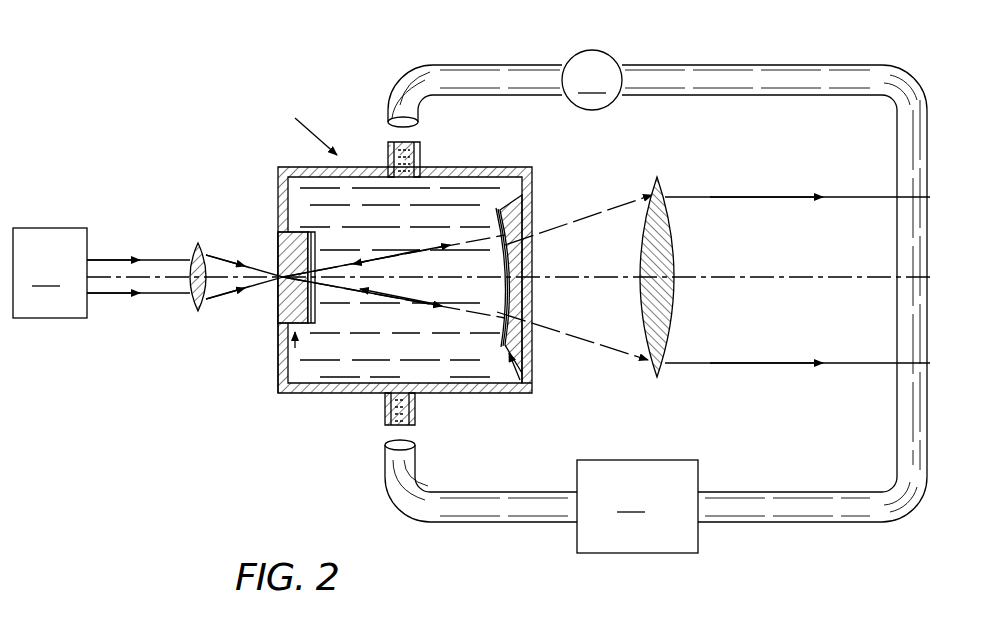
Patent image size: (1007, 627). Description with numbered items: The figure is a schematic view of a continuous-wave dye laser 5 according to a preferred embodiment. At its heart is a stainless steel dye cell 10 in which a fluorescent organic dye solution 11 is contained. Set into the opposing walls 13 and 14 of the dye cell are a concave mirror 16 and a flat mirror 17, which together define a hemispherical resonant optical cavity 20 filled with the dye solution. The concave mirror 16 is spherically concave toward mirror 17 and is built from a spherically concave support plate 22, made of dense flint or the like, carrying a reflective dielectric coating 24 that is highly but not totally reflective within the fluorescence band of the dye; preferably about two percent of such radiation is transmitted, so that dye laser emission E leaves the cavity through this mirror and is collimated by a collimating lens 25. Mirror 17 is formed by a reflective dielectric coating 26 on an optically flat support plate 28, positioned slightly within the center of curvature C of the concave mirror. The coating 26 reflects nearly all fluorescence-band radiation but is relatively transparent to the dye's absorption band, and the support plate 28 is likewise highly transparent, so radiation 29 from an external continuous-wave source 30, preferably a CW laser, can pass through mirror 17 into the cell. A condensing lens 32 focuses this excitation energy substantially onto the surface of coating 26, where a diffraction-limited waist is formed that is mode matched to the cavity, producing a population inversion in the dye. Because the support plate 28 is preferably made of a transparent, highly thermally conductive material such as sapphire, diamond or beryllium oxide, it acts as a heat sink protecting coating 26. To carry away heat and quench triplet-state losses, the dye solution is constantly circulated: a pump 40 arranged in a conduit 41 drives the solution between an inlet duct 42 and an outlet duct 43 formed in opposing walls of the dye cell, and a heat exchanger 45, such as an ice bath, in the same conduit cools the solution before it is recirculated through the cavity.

The continuous-wave dye laser 5 is at (304, 127).
The dye cell 10 is at (338, 387).
The dye solution 11 is at (318, 367).
The wall 13 is at (532, 388).
The wall 14 is at (282, 360).
The concave mirror 16 is at (520, 375).
The flat mirror 17 is at (283, 358).
The hemispherical resonant optical cavity 20 is at (388, 246).
The spherically concave support plate 22 is at (525, 260).
The reflective dielectric coating 24 is at (499, 225).
The collimating lens 25 is at (668, 187).
The reflective dielectric coating 26 is at (313, 312).
The optically flat support plate 28 is at (280, 245).
The radiation 29 is at (150, 293).
The external continuous-wave source 30 is at (50, 273).
The condensing lens 32 is at (196, 244).
The pump 40 is at (592, 80).
The conduit 41 is at (455, 65).
The inlet duct 42 is at (422, 153).
The outlet duct 43 is at (417, 408).
The heat exchanger 45 is at (637, 506).
The center of curvature C is at (283, 280).
The dye laser emission E is at (790, 197).